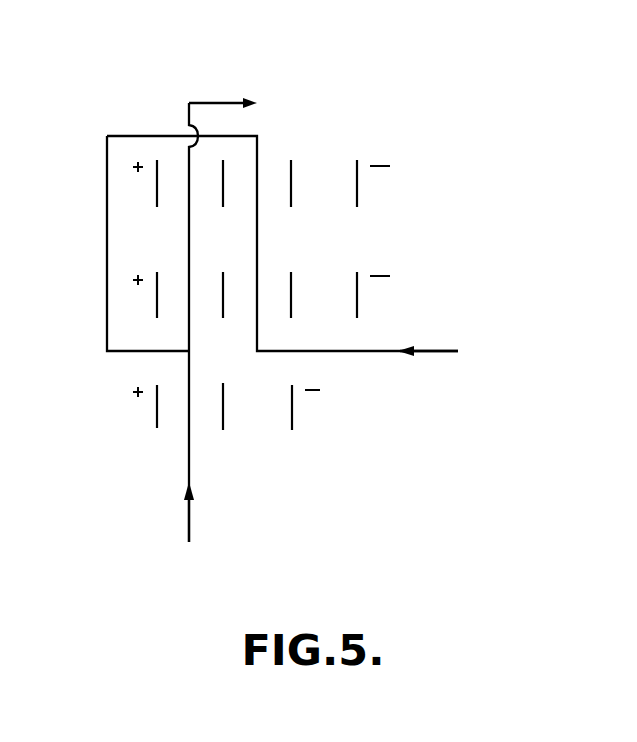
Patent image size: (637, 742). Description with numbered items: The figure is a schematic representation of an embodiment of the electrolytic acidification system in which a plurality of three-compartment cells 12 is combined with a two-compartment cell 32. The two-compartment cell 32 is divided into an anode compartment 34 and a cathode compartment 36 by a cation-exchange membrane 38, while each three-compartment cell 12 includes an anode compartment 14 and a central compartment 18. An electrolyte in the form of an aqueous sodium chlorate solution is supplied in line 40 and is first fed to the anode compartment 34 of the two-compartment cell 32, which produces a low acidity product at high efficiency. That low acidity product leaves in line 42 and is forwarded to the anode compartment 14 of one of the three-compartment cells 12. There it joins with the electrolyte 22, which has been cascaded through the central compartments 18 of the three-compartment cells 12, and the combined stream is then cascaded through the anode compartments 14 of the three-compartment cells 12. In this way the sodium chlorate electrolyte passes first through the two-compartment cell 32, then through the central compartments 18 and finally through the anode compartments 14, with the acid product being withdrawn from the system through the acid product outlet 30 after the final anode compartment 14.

The three-compartment cell 12 is at (392, 298).
The anode compartment 14 is at (203, 290).
The central compartment 18 is at (272, 287).
The electrolyte 22 is at (422, 350).
The acid product outlet 30 is at (202, 103).
The two-compartment cell 32 is at (330, 410).
The anode compartment 34 is at (203, 395).
The cathode compartment 36 is at (262, 422).
The cation-exchange membrane 38 is at (225, 402).
The line 40 is at (190, 512).
The line 42 is at (190, 371).